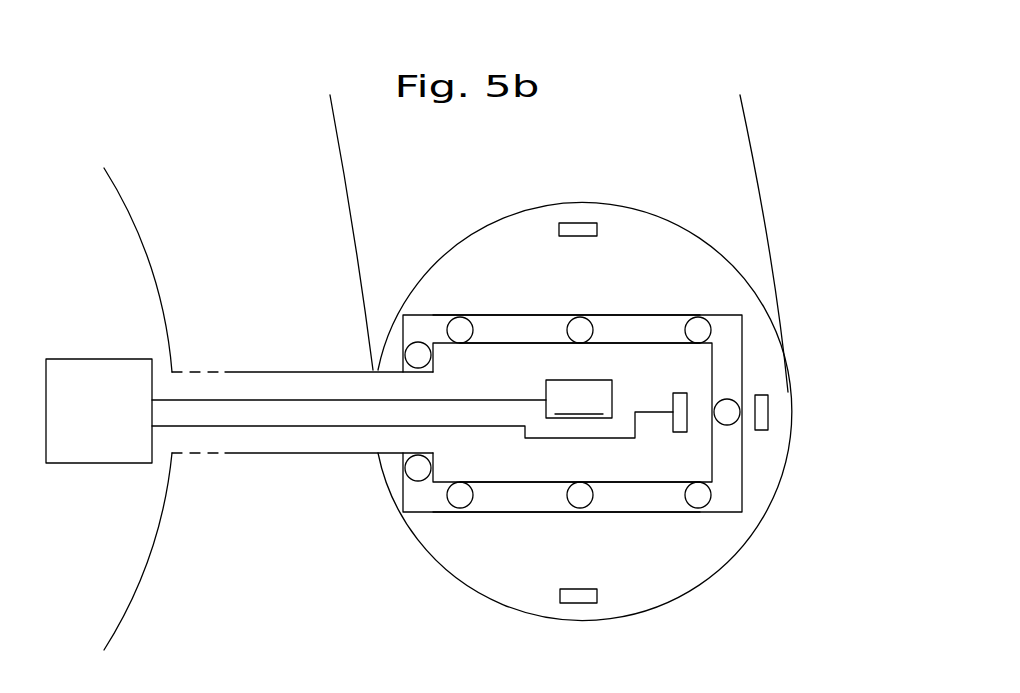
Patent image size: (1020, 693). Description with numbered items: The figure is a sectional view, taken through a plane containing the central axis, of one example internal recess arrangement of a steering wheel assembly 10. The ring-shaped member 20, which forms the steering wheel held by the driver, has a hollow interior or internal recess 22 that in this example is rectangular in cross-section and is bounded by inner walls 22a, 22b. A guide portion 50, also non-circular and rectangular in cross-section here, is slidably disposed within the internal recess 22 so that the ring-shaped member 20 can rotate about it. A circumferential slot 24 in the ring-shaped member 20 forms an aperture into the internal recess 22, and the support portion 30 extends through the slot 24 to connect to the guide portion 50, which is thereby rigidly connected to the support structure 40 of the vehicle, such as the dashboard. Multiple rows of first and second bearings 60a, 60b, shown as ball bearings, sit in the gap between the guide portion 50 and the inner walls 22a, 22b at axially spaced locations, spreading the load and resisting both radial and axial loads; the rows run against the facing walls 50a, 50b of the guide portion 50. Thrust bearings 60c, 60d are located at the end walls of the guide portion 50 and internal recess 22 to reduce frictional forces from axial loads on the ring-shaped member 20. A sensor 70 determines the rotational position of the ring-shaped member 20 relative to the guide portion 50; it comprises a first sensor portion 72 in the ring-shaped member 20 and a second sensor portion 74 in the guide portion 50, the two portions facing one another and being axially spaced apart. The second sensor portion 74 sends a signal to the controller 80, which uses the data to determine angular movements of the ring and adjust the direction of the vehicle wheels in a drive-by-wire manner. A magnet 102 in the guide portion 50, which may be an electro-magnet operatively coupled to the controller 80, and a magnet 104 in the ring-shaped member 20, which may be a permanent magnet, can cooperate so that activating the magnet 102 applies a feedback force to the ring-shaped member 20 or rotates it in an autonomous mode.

The steering wheel assembly 10 is at (602, 370).
The ring-shaped member 20 is at (752, 240).
The internal recess 22 is at (430, 314).
The inner wall 22a is at (533, 313).
The inner wall 22b is at (500, 513).
The slot 24 is at (386, 371).
The support portion 30 is at (306, 440).
The support structure 40 is at (148, 562).
The guide portion 50 is at (692, 455).
The guide portion wall 50a is at (526, 345).
The guide portion wall 50b is at (538, 474).
The first bearings 60a is at (459, 326).
The second bearings 60b is at (455, 504).
The thrust bearing 60c is at (729, 404).
The thrust bearing 60d is at (415, 350).
The sensor 70 is at (816, 381).
The first sensor portion 72 is at (768, 410).
The second sensor portion 74 is at (673, 402).
The controller 80 is at (92, 370).
The magnet 102 is at (579, 399).
The magnet 104 is at (578, 222).